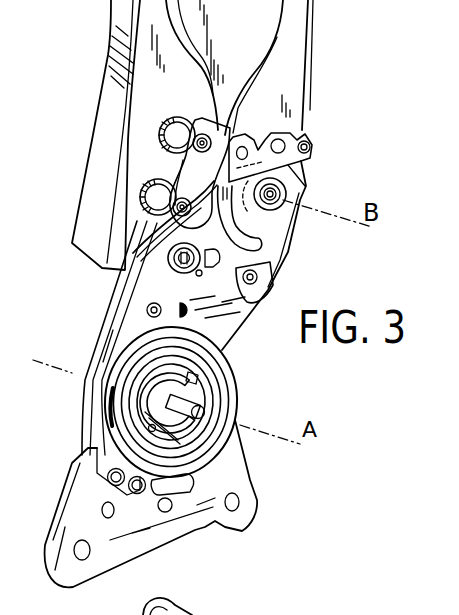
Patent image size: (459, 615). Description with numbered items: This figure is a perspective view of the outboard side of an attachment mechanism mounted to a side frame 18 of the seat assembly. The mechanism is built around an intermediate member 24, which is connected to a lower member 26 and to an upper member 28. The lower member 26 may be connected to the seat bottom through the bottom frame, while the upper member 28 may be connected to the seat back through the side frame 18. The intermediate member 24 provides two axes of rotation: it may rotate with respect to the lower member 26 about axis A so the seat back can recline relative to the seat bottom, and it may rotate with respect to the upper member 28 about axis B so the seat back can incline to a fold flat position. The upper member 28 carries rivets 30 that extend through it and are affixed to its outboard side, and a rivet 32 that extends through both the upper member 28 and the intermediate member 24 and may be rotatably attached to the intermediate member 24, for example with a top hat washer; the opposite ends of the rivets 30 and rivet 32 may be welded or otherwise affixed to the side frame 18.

The side frame 18 is at (260, 31).
The intermediate member 24 is at (218, 327).
The lower member 26 is at (233, 470).
The upper member 28 is at (185, 165).
The rivets 30 is at (153, 146).
The rivet 32 is at (318, 146).